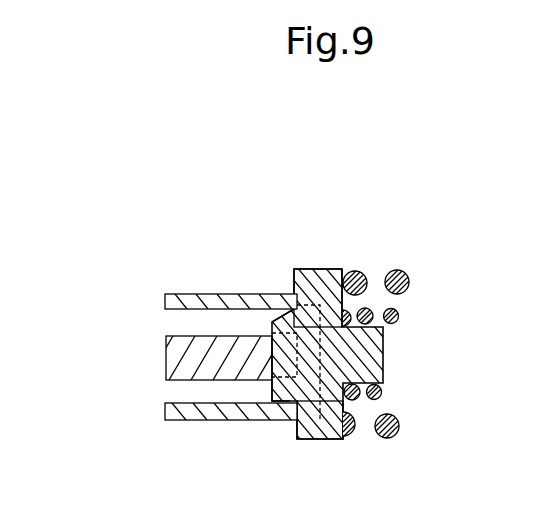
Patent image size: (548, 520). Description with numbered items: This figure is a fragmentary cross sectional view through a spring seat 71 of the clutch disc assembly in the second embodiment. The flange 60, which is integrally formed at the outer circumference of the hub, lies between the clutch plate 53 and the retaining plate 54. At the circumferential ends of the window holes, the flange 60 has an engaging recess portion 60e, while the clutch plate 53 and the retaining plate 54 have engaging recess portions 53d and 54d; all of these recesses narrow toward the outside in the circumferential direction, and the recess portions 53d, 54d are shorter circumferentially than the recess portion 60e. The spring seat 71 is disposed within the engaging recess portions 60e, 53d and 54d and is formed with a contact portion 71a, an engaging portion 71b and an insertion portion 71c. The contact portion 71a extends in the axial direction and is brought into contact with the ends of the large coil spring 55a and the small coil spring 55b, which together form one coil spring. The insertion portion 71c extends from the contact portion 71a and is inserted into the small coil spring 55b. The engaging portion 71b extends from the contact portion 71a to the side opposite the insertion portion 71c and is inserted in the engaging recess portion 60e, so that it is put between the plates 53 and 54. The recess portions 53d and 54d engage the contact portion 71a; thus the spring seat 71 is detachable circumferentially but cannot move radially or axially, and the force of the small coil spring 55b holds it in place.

The clutch plate 53 is at (212, 410).
The engaging recess portion 53d is at (312, 432).
The retaining plate 54 is at (212, 303).
The engaging recess portion 54d is at (322, 269).
The large coil spring 55a is at (400, 306).
The small coil spring 55b is at (399, 314).
The flange 60 is at (176, 357).
The engaging recess portion 60e is at (287, 384).
The spring seat 71 is at (340, 237).
The contact portion 71a is at (349, 300).
The engaging portion 71b is at (296, 288).
The insertion portion 71c is at (368, 354).